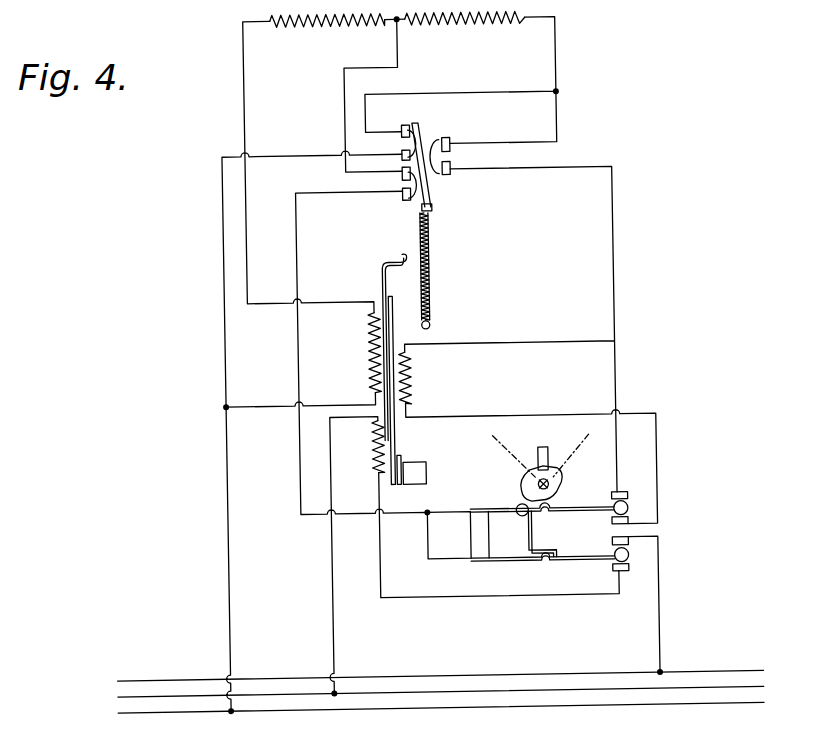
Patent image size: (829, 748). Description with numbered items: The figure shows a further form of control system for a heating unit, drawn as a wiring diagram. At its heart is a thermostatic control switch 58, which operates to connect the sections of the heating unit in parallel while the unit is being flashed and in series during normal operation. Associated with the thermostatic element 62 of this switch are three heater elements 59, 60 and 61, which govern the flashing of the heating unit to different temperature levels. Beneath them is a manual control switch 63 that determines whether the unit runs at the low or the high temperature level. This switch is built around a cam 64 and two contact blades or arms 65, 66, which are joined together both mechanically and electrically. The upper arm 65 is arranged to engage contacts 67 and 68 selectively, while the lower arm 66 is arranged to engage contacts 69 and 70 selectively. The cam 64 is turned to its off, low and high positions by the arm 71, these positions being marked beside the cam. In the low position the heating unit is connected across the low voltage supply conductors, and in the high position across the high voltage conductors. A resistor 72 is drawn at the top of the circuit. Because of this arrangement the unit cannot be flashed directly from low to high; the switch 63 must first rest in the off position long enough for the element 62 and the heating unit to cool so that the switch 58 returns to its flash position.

The thermostatic control switch 58 is at (470, 296).
The heater element 59 is at (370, 366).
The heater element 60 is at (371, 452).
The heater element 61 is at (409, 371).
The thermostatic element 62 is at (396, 340).
The manual control switch 63 is at (599, 500).
The cam 64 is at (521, 483).
The contact blade 65 is at (574, 520).
The contact blade 66 is at (574, 568).
The contact 67 is at (626, 498).
The contact 68 is at (626, 523).
The contact 69 is at (626, 544).
The contact 70 is at (626, 572).
The arm 71 is at (548, 457).
The resistor 72 is at (445, 20).